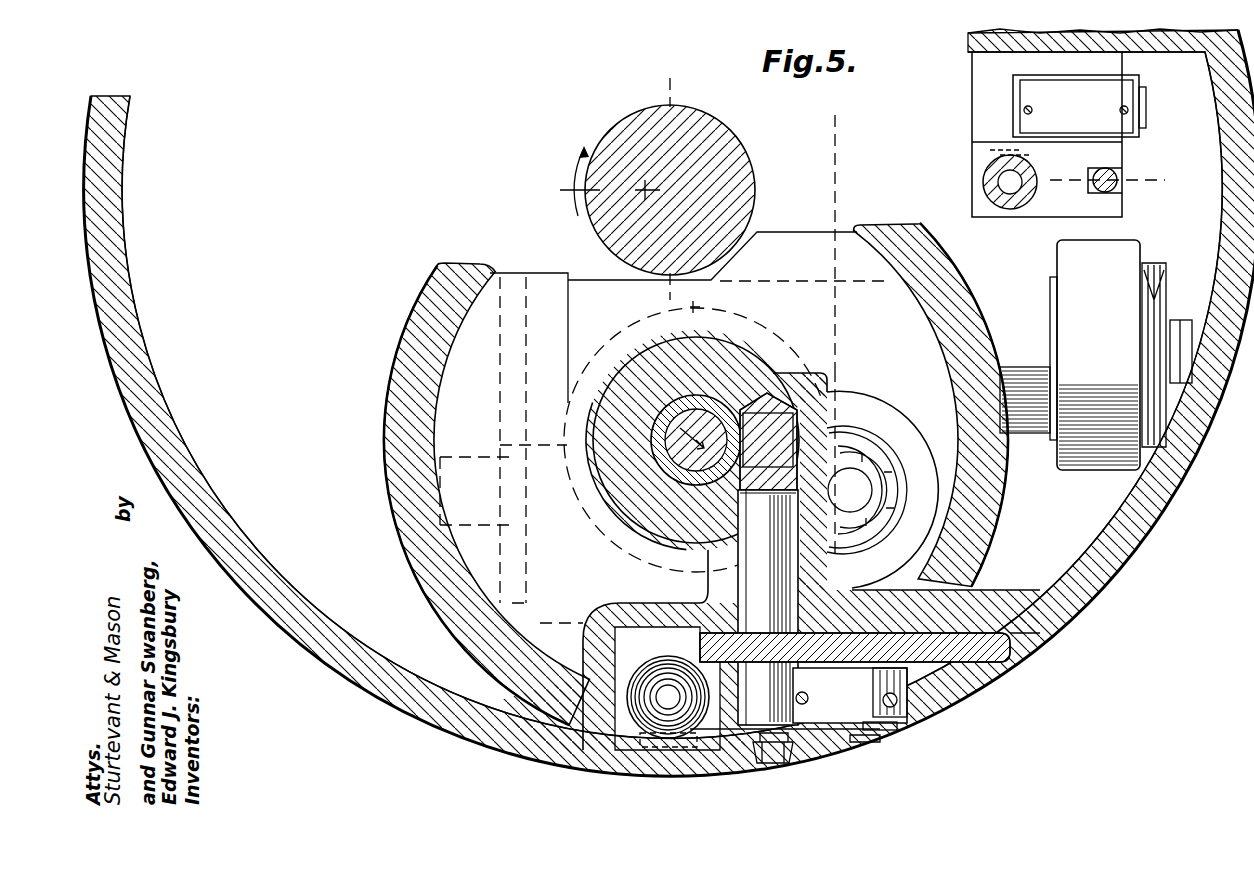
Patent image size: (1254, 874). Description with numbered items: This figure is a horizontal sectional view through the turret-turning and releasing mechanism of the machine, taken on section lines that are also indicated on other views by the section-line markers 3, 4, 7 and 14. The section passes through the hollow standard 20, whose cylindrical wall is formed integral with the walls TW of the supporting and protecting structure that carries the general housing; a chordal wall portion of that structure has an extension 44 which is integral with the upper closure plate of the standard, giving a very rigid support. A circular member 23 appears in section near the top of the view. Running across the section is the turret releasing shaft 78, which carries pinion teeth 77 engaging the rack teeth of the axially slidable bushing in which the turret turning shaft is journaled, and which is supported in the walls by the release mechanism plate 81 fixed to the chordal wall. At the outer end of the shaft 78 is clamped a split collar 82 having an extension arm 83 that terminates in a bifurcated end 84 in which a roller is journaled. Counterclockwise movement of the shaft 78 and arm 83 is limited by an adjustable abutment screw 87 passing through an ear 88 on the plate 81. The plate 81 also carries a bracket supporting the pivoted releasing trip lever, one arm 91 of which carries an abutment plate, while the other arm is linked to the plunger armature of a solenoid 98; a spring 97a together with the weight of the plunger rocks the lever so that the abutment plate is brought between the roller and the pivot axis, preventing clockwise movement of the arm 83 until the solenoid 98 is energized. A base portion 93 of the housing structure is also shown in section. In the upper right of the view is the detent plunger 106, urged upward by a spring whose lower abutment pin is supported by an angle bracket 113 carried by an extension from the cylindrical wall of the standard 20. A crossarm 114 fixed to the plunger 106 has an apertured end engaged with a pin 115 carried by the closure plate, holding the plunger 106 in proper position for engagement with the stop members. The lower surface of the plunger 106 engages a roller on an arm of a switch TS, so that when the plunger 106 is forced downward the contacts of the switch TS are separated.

The section line 3 is at (1186, 712).
The section line 4 is at (1186, 530).
The section line 7 is at (664, 70).
The section line 14 is at (545, 190).
The hollow standard 20 is at (1191, 461).
The roller 23 is at (727, 141).
The extension of chordal wall portion 44 is at (724, 356).
The pinion teeth 77 is at (795, 408).
The turret releasing shaft 78 is at (745, 580).
The release mechanism plate 81 is at (1010, 646).
The split collar 82 is at (804, 718).
The extension arm 83 is at (798, 698).
The bifurcated end 84 is at (887, 731).
The adjustable abutment screw 87 is at (896, 703).
The ear 88 is at (896, 676).
The arm of releasing trip lever 91 is at (1162, 291).
The housing base 93 is at (623, 603).
The spring 97a is at (680, 733).
The solenoid 98 is at (641, 702).
The detent plunger 106 is at (992, 183).
The angle bracket 113 is at (1064, 72).
The crossarm 114 is at (1058, 205).
The pin 115 is at (1116, 173).
The walls TW is at (392, 381).
The switch TS is at (1079, 106).